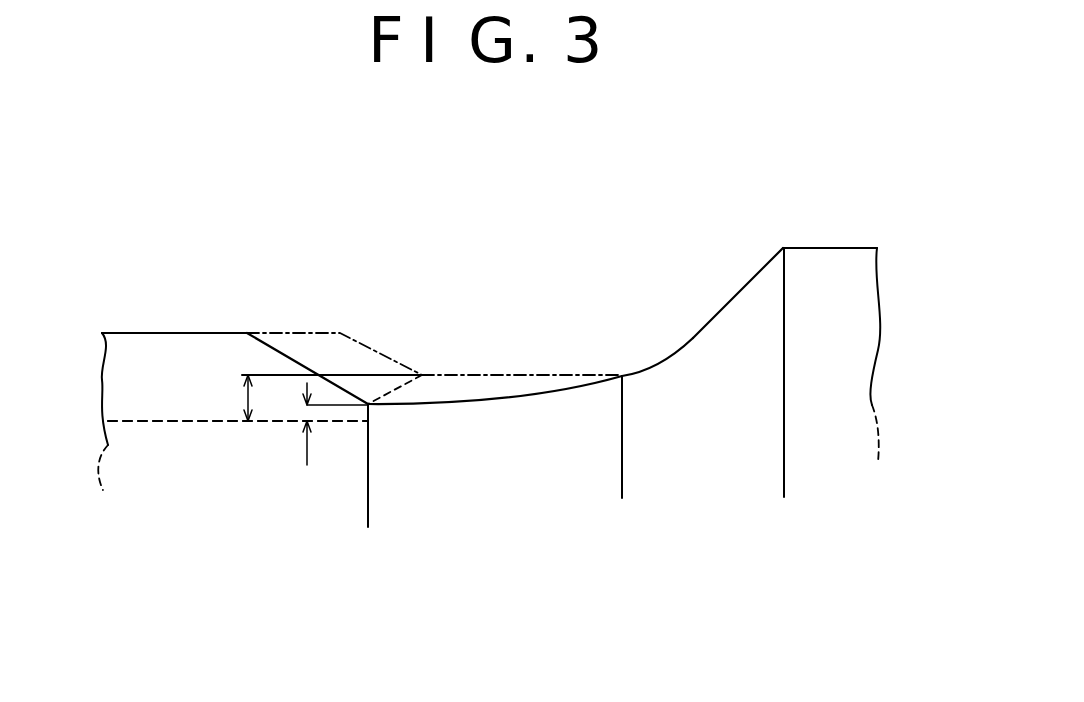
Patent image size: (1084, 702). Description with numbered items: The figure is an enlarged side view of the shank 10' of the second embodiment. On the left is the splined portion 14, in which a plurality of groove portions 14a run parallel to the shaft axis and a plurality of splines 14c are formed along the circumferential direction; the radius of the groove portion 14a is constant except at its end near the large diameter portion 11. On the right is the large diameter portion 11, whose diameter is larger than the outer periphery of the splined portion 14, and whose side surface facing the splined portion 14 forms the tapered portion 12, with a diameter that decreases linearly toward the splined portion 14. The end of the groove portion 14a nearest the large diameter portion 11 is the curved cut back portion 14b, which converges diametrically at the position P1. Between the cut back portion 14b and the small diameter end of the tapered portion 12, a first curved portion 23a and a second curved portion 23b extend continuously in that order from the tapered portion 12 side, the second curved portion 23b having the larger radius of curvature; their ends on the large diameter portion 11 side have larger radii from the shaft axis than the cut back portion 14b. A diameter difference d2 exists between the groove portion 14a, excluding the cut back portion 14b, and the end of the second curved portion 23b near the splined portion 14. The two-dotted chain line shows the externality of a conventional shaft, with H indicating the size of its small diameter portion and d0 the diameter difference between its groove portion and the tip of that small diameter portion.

The shank 10' is at (616, 209).
The large diameter portion 11 is at (845, 249).
The tapered portion 12 is at (779, 250).
The splined portion 14 is at (133, 333).
The groove portion 14a is at (141, 416).
The cut back portion 14b is at (357, 388).
The spline 14c is at (197, 333).
The first curved portion 23a is at (691, 322).
The second curved portion 23b is at (618, 388).
The position P1 is at (369, 404).
The size of the small diameter portion of the conventional shaft H is at (495, 372).
The diameter difference d0 is at (231, 398).
The diameter difference d2 is at (321, 424).